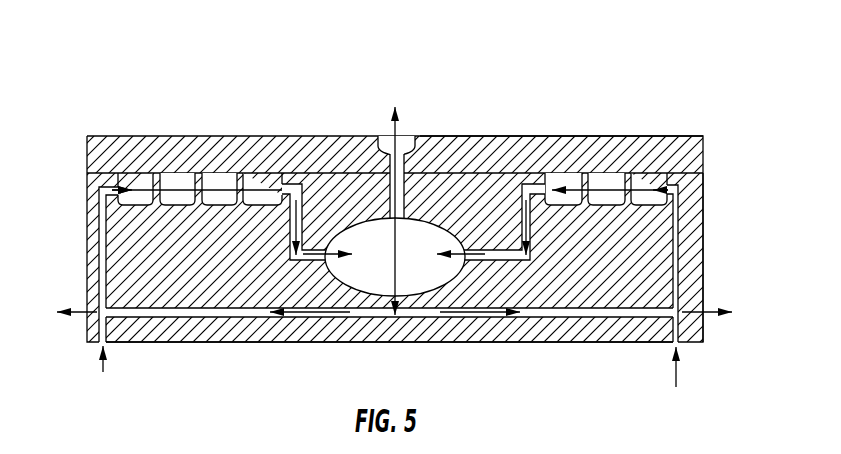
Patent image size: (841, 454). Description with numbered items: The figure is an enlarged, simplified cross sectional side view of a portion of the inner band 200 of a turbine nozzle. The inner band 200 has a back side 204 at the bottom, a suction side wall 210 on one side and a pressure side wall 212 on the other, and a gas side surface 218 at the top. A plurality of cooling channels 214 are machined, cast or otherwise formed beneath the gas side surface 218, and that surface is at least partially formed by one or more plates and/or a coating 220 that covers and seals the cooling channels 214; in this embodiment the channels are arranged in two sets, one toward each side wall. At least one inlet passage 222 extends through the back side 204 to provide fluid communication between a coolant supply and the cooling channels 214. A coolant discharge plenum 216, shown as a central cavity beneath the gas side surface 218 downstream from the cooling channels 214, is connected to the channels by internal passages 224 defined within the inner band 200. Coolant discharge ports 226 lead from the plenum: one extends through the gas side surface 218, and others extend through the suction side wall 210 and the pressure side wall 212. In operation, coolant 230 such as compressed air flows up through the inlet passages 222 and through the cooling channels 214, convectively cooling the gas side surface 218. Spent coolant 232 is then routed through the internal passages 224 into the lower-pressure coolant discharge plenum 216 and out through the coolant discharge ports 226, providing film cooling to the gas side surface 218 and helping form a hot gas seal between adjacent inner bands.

The inner band 200 is at (558, 57).
The back side 204 is at (387, 343).
The suction side wall 210 is at (87, 220).
The pressure side wall 212 is at (703, 217).
The cooling channels 214 is at (223, 183).
The coolant discharge plenum 216 is at (408, 273).
The gas side surface 218 is at (480, 137).
The plate or coating 220 is at (273, 143).
The inlet passage 222 is at (97, 260).
The internal passage 224 is at (288, 243).
The coolant discharge port 226 is at (407, 137).
The coolant 230 is at (230, 188).
The spent coolant 232 is at (400, 118).